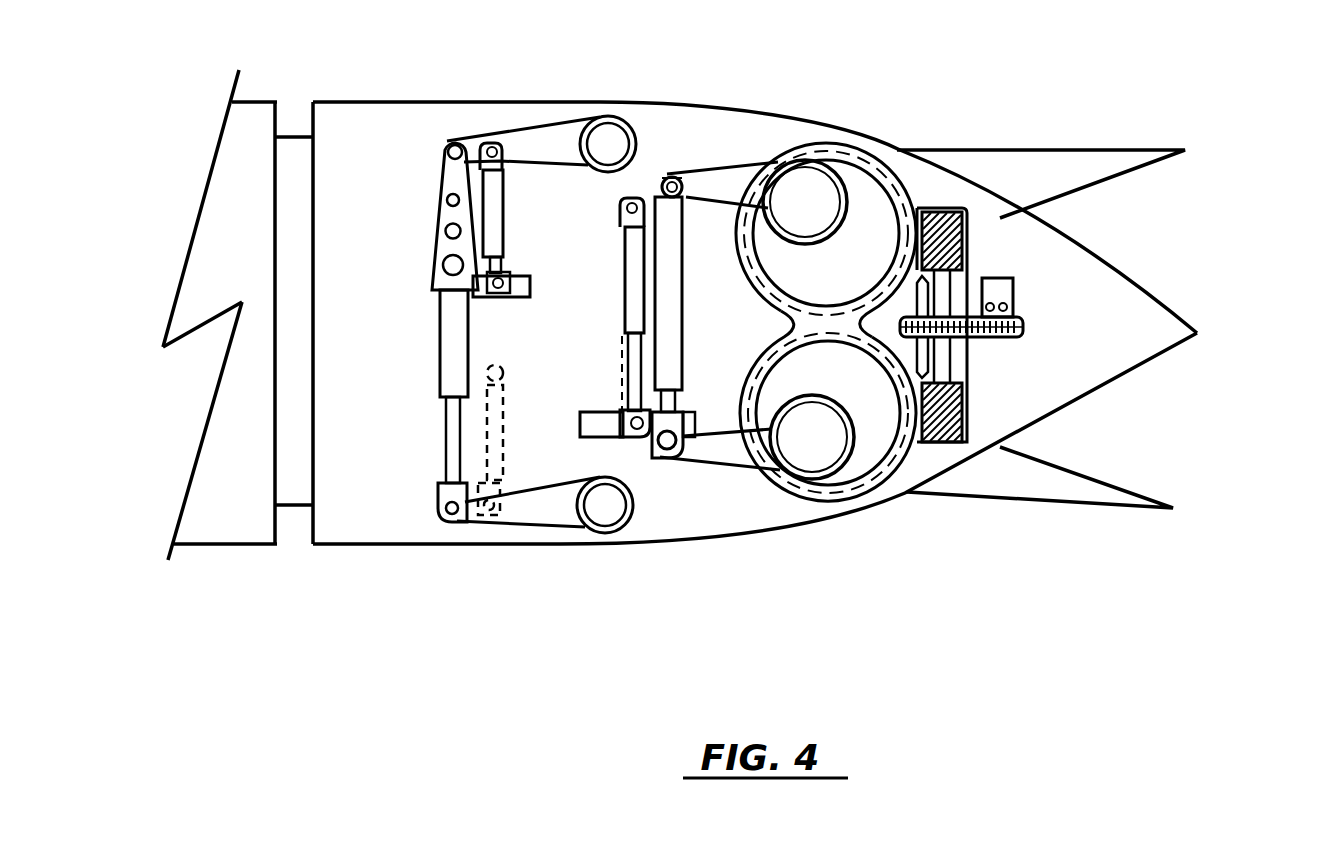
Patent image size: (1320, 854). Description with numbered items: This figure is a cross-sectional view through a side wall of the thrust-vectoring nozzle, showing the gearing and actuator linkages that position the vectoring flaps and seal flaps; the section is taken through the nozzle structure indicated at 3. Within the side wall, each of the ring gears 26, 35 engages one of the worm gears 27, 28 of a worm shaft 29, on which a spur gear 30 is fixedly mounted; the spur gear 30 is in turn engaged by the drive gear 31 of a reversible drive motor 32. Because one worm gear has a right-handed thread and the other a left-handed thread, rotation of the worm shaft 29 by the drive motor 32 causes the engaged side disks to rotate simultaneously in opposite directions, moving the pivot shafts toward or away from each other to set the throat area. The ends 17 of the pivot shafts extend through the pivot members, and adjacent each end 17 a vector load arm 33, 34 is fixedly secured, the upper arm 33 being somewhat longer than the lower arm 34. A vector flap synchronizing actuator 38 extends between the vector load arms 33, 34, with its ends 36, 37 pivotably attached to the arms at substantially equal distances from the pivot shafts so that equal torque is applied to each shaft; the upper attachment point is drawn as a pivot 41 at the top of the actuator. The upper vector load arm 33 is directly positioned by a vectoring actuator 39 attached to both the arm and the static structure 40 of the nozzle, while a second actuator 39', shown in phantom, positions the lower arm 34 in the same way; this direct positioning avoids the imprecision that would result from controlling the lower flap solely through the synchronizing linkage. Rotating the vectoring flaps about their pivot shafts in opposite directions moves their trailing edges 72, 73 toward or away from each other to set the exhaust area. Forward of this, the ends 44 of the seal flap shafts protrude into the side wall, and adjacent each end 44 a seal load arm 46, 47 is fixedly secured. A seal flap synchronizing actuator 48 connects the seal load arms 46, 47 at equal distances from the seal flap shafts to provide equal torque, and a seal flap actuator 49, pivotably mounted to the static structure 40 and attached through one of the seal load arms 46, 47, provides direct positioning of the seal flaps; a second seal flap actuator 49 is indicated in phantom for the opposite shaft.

The wing strut / support 3 is at (228, 438).
The end of pivot shaft 17 is at (788, 218).
The ring gear 26 is at (866, 152).
The worm gear 27 is at (935, 215).
The worm gear 28 is at (940, 445).
The worm shaft 29 is at (950, 292).
The spur gear 30 is at (952, 340).
The drive gear 31 is at (1025, 322).
The reversible drive motor 32 is at (995, 290).
The vector load arm 33 is at (728, 182).
The vector load arm 34 is at (725, 455).
The ring gear 35 is at (852, 512).
The end of vector flap synchronizing actuator 36 is at (676, 176).
The end of vector flap synchronizing actuator 37 is at (670, 450).
The vector flap synchronizing actuator 38 is at (668, 312).
The vectoring actuator 39 is at (605, 317).
The actuator 39' is at (599, 373).
The static structure 40 is at (598, 414).
The upper pivot pin 41 is at (650, 170).
The end of seal flap shaft 44 is at (605, 150).
The seal load arm 46 is at (528, 150).
The seal load arm 47 is at (533, 507).
The seal flap synchronizing actuator 48 is at (440, 345).
The seal flap actuator 49 is at (505, 215).
The trailing edge 72 is at (1188, 150).
The trailing edge 73 is at (1176, 508).